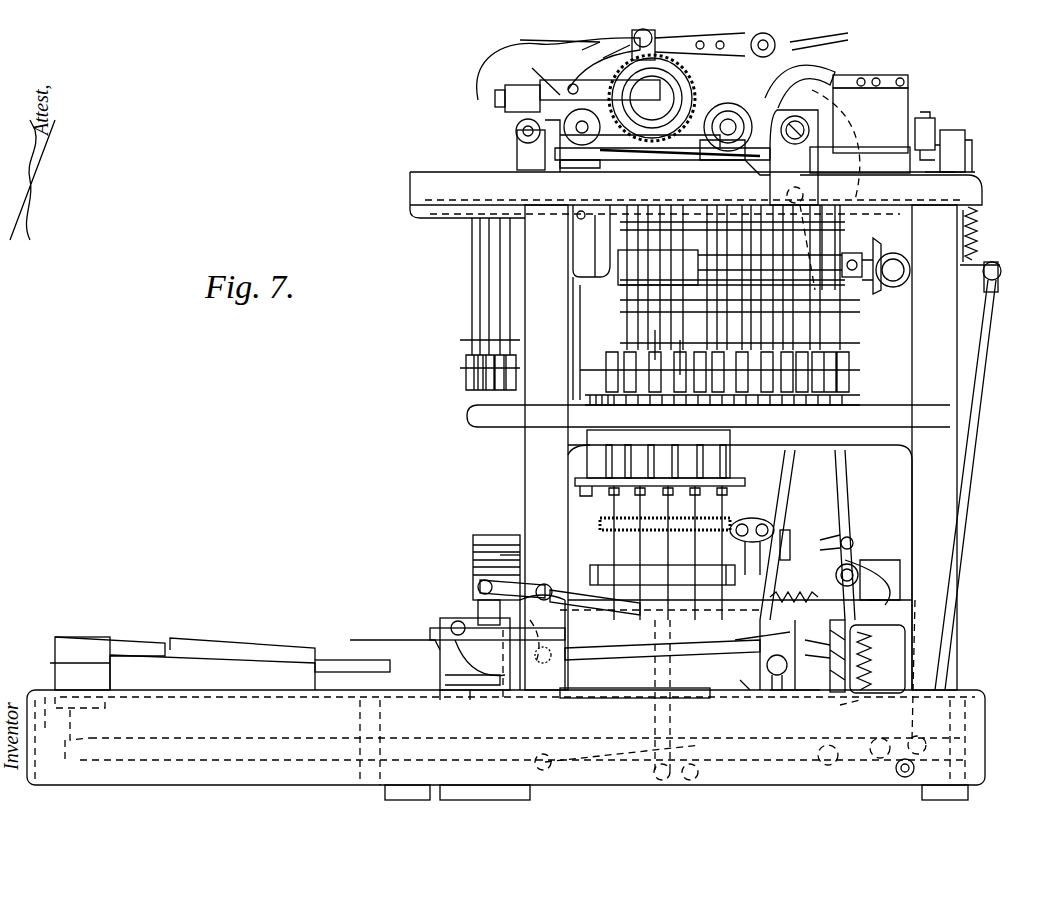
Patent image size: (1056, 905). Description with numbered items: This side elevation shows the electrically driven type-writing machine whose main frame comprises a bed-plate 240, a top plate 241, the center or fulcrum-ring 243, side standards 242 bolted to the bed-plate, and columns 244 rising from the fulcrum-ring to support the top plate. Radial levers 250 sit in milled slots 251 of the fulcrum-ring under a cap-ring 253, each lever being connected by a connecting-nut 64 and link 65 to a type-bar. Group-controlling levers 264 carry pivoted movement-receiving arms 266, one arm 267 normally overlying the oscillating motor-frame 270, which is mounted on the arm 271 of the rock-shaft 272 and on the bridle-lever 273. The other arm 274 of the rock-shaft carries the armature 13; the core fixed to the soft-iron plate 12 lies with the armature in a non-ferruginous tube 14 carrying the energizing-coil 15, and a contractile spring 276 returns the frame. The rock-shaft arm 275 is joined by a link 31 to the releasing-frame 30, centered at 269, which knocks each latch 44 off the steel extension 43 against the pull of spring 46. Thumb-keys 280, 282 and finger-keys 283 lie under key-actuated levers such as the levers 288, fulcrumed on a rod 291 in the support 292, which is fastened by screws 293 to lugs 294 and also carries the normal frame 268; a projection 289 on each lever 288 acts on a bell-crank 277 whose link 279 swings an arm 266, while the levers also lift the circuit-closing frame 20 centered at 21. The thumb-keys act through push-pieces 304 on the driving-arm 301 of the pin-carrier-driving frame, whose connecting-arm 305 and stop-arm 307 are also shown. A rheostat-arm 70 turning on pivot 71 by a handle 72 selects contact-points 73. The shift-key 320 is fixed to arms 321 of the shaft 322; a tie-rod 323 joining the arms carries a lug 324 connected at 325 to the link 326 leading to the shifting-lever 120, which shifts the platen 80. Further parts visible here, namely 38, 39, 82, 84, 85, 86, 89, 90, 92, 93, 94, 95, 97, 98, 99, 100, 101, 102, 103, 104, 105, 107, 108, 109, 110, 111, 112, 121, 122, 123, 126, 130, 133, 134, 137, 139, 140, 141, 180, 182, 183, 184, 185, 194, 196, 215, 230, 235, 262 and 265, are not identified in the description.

The soft-iron plate 12 is at (525, 783).
The armature 13 is at (478, 615).
The non-ferruginous tube 14 is at (542, 642).
The energizing-coil 15 is at (470, 690).
The circuit-closing frame 20 is at (873, 587).
The center of circuit-closing frame 21 is at (917, 663).
The releasing-frame 30 is at (840, 672).
The link 31 is at (763, 642).
The housing 38 is at (870, 672).
The link 39 is at (855, 715).
The steel extension 43 is at (882, 735).
The latch 44 is at (879, 661).
The contractile spring 46 is at (826, 656).
The connecting-nut 64 is at (465, 362).
The link 65 is at (472, 300).
The rheostat-arm 70 is at (775, 690).
The pivot 71 is at (748, 680).
The handle 72 is at (800, 690).
The contact-points 73 is at (768, 672).
The platen 80 is at (660, 160).
The arm 82 is at (532, 73).
The arm 84 is at (800, 86).
The screw 85 is at (808, 130).
The plate 86 is at (794, 157).
The lever 89 is at (748, 160).
The wheel 90 is at (735, 120).
The lever 92 is at (720, 150).
The plate 93 is at (595, 150).
The wheel 94 is at (592, 127).
The plate 95 is at (728, 154).
The rail 97 is at (640, 150).
The arm 98 is at (548, 38).
The lever 99 is at (795, 70).
The post 100 is at (720, 38).
The link 101 is at (602, 58).
The bar 102 is at (600, 90).
The cam plate 103 is at (575, 52).
The knob 104 is at (752, 43).
The gear 105 is at (652, 98).
The hood 107 is at (485, 62).
The block 108 is at (505, 97).
The stud 109 is at (500, 105).
The roller 110 is at (518, 135).
The bracket 111 is at (530, 135).
The arm 112 is at (545, 140).
The shifting-lever 120 is at (840, 158).
The pivot 121 is at (795, 198).
The block 122 is at (905, 96).
The screw 123 is at (910, 80).
The bar 126 is at (870, 77).
The rod 130 is at (975, 237).
The bracket 133 is at (925, 150).
The bracket 134 is at (945, 170).
The spring 137 is at (978, 222).
The arc 139 is at (861, 145).
The plate 140 is at (940, 185).
The bracket 141 is at (1018, 258).
The carriage bar 180 is at (658, 267).
The rod 182 is at (705, 268).
The band 183 is at (840, 215).
The rod 184 is at (573, 278).
The block 185 is at (845, 262).
The wheel 194 is at (905, 268).
The bracket 196 is at (898, 282).
The channel 215 is at (595, 233).
The plate 230 is at (700, 44).
The screw 235 is at (880, 255).
The bed-plate 240 is at (38, 690).
The top plate 241 is at (460, 182).
The side standards 242 is at (525, 462).
The fulcrum-ring 243 is at (470, 415).
The columns 244 is at (995, 366).
The radial levers 250 is at (590, 400).
The milled slots 251 is at (693, 412).
The cap-ring 253 is at (680, 375).
The rod 262 is at (655, 355).
The group-controlling levers 264 is at (658, 470).
The bracket 265 is at (565, 463).
The movement-receiving arms 266 is at (610, 492).
The movement-receiving arm 267 is at (727, 500).
The normal frame 268 is at (510, 695).
The center of releasing-frame 269 is at (840, 575).
The oscillating motor-frame 270 is at (610, 568).
The arm of rock-shaft 271 is at (575, 590).
The rock-shaft 272 is at (506, 564).
The bridle-lever 273 is at (600, 760).
The arm of rock-shaft 274 is at (483, 582).
The arm of rock-shaft 275 is at (548, 668).
The contractile spring 276 is at (773, 641).
The bell-cranks 277 is at (568, 540).
The links 279 is at (640, 520).
The thumb-key 280 is at (75, 670).
The thumb-key 282 is at (105, 645).
The finger-keys 283 is at (265, 650).
The key-actuated levers 288 is at (638, 706).
The projection 289 is at (565, 610).
The rod 291 is at (455, 628).
The support 292 is at (440, 645).
The screws 293 is at (352, 665).
The lugs 294 is at (342, 740).
The driving-arm 301 is at (848, 538).
The push-pieces 304 is at (790, 530).
The connecting-arm 305 is at (848, 475).
The stop-arm 307 is at (878, 560).
The shift-key 320 is at (105, 703).
The arms 321 is at (220, 745).
The shaft 322 is at (915, 768).
The tie-rod 323 is at (690, 765).
The lug 324 is at (809, 755).
The connection 325 is at (682, 700).
The link 326 is at (793, 535).